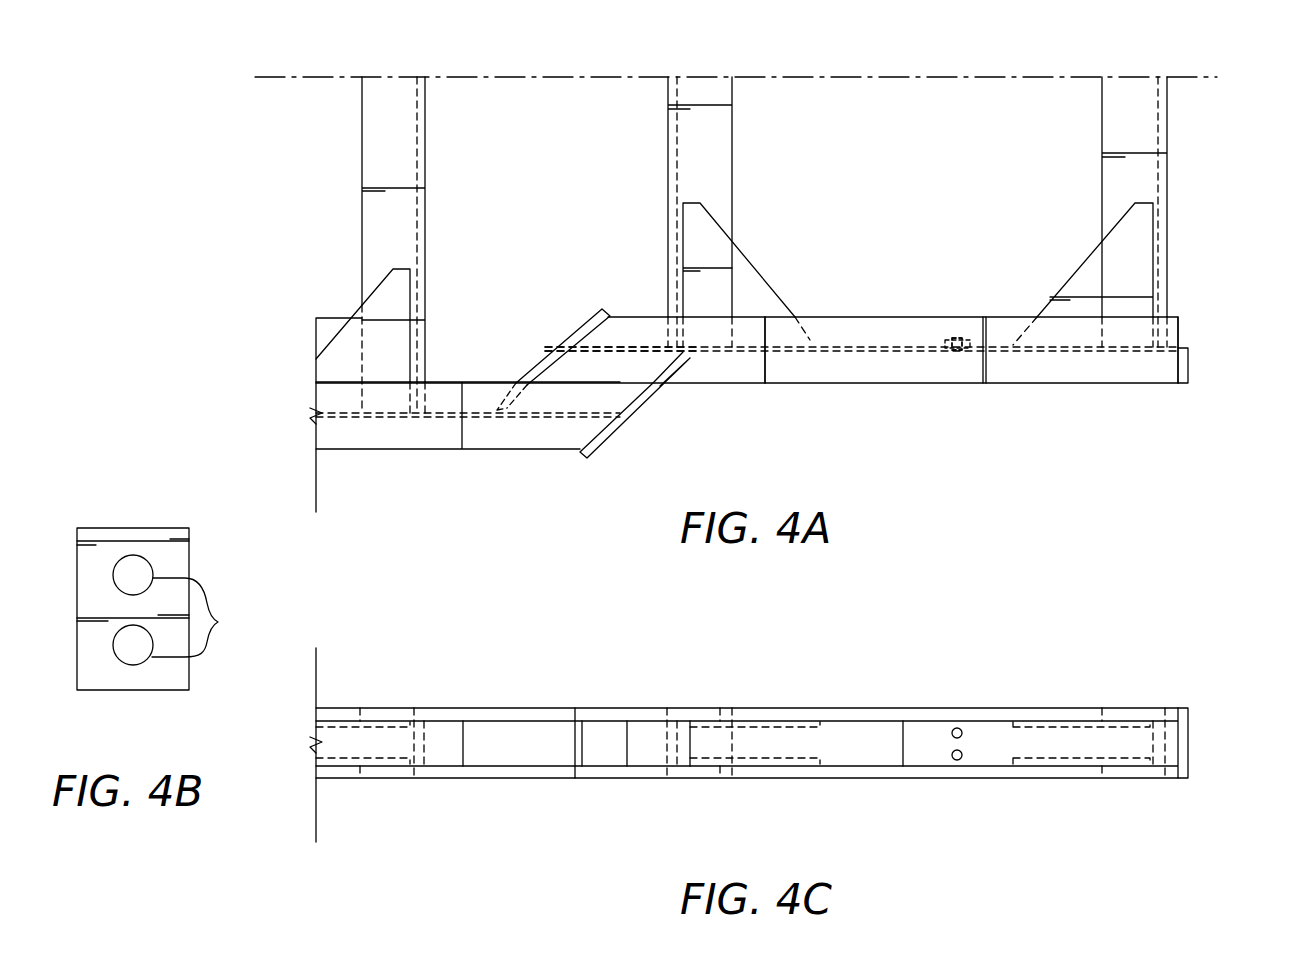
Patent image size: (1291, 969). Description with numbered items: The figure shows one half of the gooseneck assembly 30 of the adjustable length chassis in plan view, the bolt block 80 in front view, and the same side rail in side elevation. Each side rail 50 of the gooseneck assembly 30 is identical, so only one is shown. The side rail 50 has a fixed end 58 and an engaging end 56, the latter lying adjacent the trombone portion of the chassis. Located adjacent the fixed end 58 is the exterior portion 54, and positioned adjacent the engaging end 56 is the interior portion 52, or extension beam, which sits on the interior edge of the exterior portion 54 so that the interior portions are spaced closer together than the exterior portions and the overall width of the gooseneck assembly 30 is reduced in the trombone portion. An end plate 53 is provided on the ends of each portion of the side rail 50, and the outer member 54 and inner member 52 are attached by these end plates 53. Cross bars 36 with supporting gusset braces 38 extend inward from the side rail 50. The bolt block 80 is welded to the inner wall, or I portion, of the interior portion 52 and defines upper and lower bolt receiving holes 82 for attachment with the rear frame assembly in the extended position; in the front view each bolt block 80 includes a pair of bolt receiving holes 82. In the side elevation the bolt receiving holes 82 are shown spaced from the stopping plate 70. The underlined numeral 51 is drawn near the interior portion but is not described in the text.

In FIG. 4A, the gooseneck assembly 30 is at (152, 126).
In FIG. 4A, the cross bars 36 is at (425, 158).
In FIG. 4C, the cross bars 36 is at (438, 722).
In FIG. 4A, the gusset braces 38 is at (365, 290).
In FIG. 4C, the gusset braces 38 is at (380, 720).
In FIG. 4A, the side rail 50 is at (882, 402).
In FIG. 4C, the side rail 50 is at (882, 802).
In FIG. 4A, the beam web plate 51 is at (626, 374).
In FIG. 4A, the interior portion 52 is at (887, 317).
In FIG. 4C, the interior portion 52 is at (882, 728).
In FIG. 4A, the end plate 53 is at (566, 345).
In FIG. 4C, the end plate 53 is at (607, 762).
In FIG. 4A, the exterior portion 54 is at (495, 452).
In FIG. 4C, the exterior portion 54 is at (522, 762).
In FIG. 4A, the engaging end 56 is at (1213, 320).
In FIG. 4A, the fixed end 58 is at (296, 345).
In FIG. 4C, the fixed end 58 is at (296, 730).
In FIG. 4A, the stopping plate 70 is at (1188, 370).
In FIG. 4C, the stopping plate 70 is at (1188, 770).
In FIG. 4A, the bolt block 80 is at (952, 317).
In FIG. 4B, the bolt block 80 is at (160, 528).
In FIG. 4A, the bolt receiving holes 82 is at (957, 350).
In FIG. 4B, the bolt receiving holes 82 is at (185, 610).
In FIG. 4C, the bolt receiving holes 82 is at (958, 728).